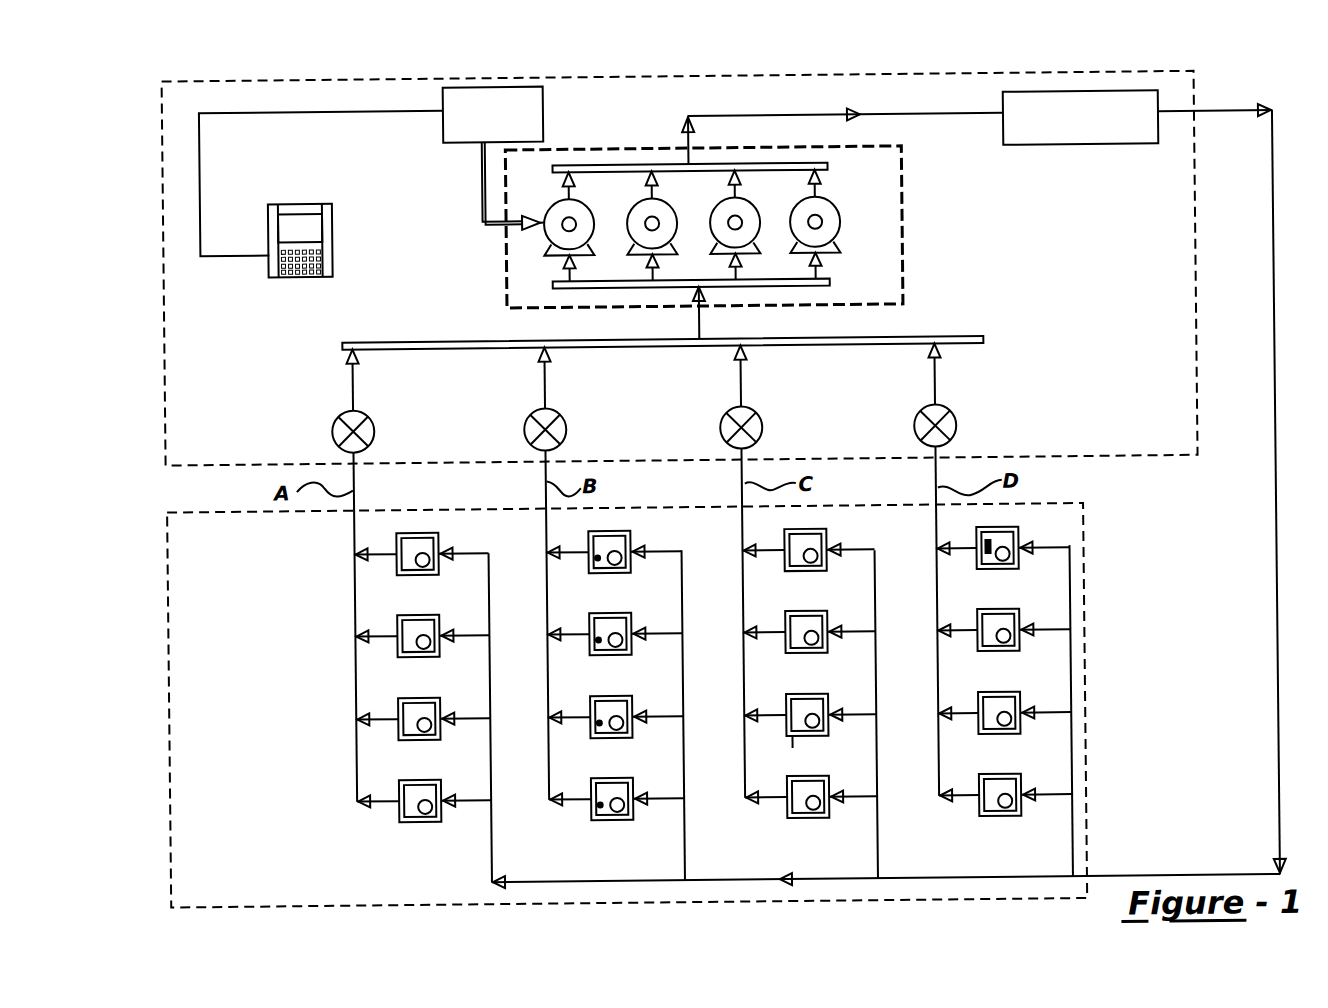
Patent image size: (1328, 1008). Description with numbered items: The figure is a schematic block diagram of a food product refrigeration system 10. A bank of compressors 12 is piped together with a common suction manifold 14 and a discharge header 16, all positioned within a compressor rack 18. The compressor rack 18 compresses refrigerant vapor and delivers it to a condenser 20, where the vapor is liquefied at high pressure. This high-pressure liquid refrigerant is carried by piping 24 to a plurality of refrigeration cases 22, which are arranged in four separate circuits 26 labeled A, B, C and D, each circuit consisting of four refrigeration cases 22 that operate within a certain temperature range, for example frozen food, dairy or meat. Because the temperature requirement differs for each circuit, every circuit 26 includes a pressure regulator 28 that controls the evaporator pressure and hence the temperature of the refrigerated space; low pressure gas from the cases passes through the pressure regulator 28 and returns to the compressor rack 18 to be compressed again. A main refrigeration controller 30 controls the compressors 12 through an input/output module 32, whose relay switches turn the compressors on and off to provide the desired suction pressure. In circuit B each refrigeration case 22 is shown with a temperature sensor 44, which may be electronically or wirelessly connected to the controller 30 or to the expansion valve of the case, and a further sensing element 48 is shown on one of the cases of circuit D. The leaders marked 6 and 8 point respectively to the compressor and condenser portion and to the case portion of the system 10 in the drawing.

The compressor/condenser assembly 6 is at (1201, 212).
The refrigeration case area 8 is at (1090, 652).
The refrigeration system 10 is at (1288, 133).
The compressors 12 is at (836, 209).
The common suction manifold 14 is at (834, 282).
The discharge header 16 is at (619, 166).
The compressor rack 18 is at (907, 293).
The condenser 20 is at (1085, 148).
The refrigeration cases 22 is at (424, 530).
The piping 24 is at (1277, 404).
The circuits 26 is at (1052, 607).
The pressure regulator 28 is at (361, 405).
The main refrigeration controller 30 is at (304, 274).
The input/output module 32 is at (547, 106).
The temperature sensor 44 is at (597, 560).
The sensor 48 is at (988, 547).